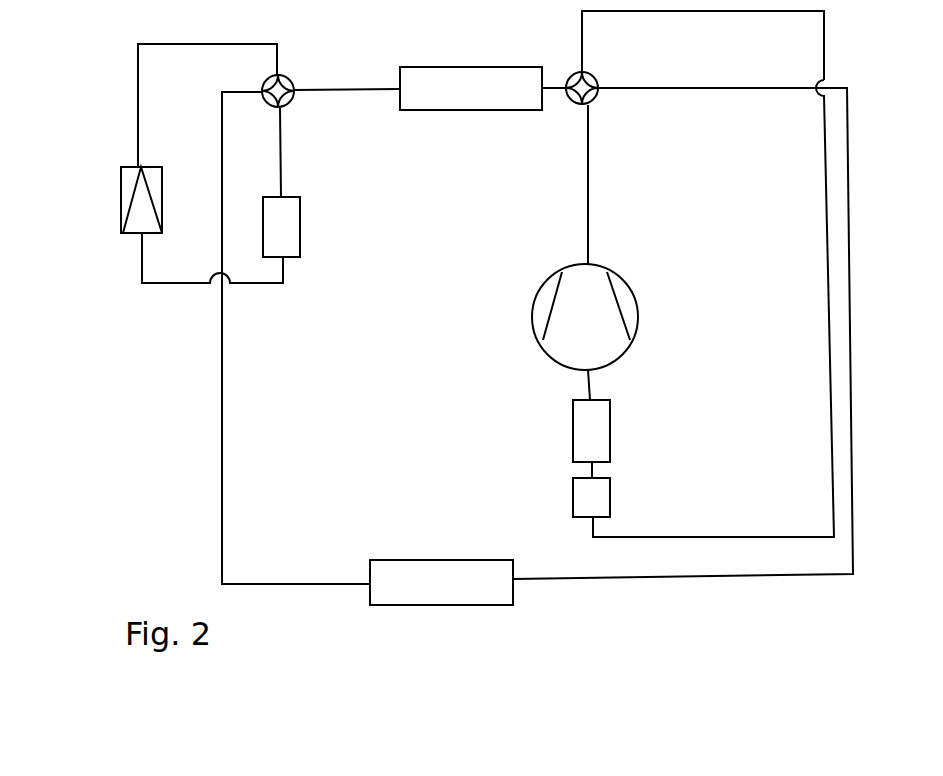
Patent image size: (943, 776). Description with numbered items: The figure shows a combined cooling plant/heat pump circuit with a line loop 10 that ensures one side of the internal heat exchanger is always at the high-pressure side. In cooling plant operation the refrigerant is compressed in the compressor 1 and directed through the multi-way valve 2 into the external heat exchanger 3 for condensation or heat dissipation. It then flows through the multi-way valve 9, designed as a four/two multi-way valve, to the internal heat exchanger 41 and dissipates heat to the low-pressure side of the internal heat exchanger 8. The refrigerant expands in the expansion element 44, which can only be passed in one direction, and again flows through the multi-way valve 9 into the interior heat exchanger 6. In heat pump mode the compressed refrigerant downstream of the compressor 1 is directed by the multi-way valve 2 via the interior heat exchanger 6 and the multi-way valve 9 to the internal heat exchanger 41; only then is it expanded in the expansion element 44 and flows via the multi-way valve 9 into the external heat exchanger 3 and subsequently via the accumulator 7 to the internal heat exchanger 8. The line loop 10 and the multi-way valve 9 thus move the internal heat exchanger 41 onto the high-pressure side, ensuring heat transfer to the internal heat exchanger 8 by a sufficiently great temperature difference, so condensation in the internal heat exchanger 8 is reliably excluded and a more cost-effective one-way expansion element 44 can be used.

The compressor 1 is at (626, 307).
The multi-way valve 2 is at (574, 99).
The external heat exchanger 3 is at (433, 89).
The interior heat exchanger 6 is at (473, 598).
The accumulator 7 is at (592, 495).
The internal heat exchanger 8 is at (592, 428).
The multi-way valve 9 is at (290, 102).
The line loop 10 is at (138, 94).
The internal heat exchanger 41 is at (298, 227).
The expansion element 44 is at (122, 202).